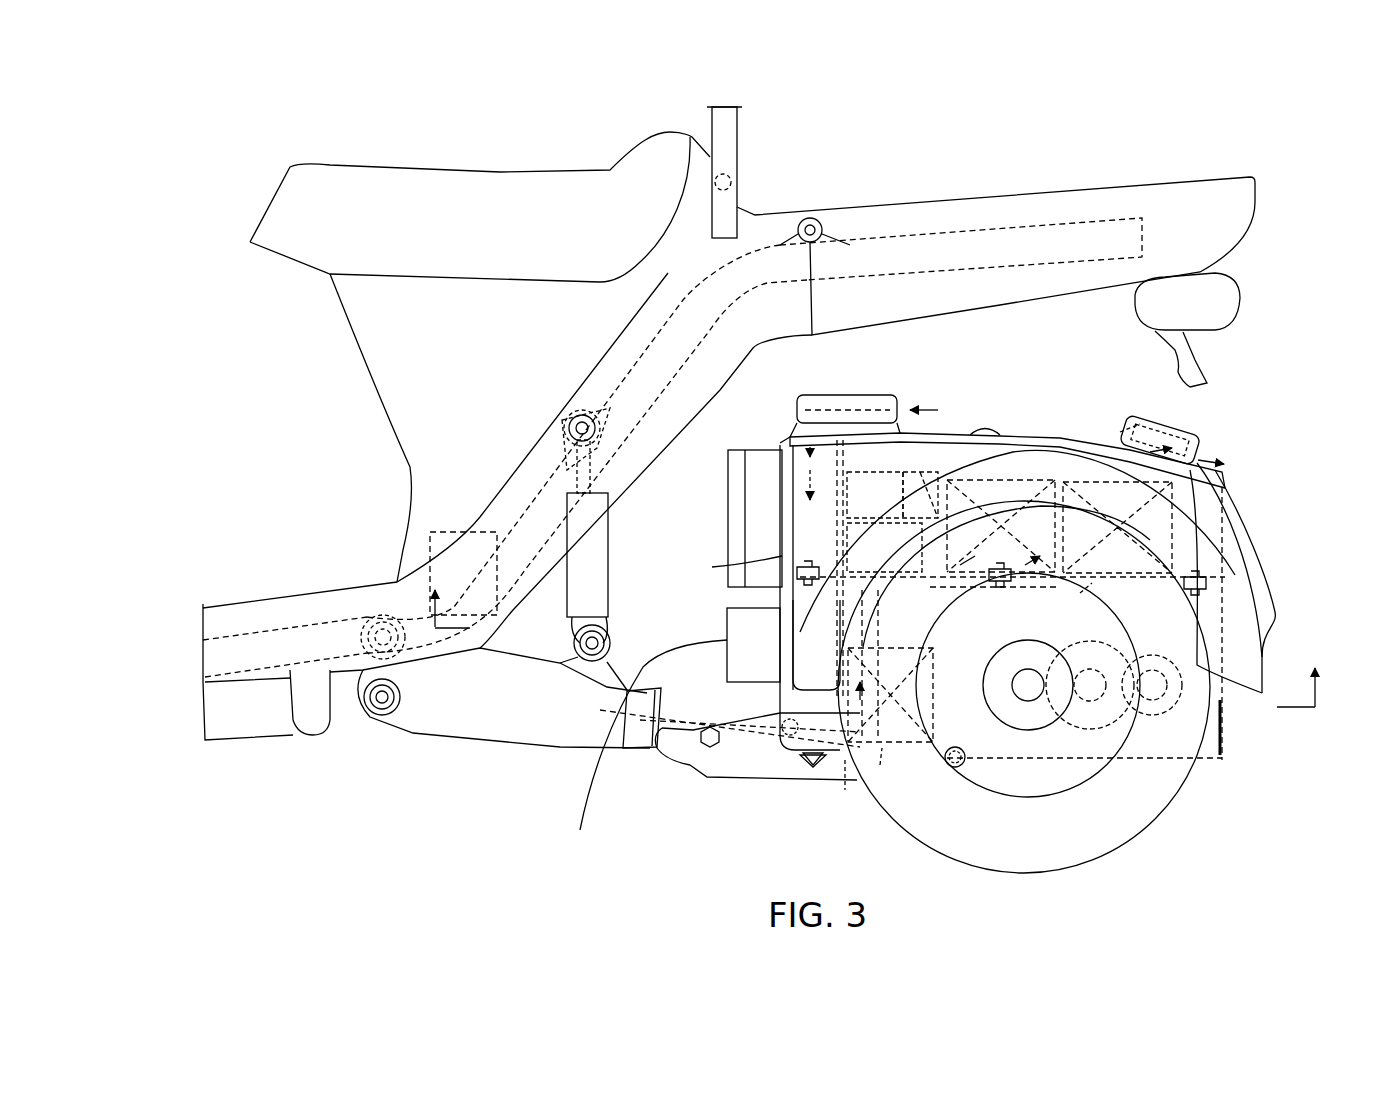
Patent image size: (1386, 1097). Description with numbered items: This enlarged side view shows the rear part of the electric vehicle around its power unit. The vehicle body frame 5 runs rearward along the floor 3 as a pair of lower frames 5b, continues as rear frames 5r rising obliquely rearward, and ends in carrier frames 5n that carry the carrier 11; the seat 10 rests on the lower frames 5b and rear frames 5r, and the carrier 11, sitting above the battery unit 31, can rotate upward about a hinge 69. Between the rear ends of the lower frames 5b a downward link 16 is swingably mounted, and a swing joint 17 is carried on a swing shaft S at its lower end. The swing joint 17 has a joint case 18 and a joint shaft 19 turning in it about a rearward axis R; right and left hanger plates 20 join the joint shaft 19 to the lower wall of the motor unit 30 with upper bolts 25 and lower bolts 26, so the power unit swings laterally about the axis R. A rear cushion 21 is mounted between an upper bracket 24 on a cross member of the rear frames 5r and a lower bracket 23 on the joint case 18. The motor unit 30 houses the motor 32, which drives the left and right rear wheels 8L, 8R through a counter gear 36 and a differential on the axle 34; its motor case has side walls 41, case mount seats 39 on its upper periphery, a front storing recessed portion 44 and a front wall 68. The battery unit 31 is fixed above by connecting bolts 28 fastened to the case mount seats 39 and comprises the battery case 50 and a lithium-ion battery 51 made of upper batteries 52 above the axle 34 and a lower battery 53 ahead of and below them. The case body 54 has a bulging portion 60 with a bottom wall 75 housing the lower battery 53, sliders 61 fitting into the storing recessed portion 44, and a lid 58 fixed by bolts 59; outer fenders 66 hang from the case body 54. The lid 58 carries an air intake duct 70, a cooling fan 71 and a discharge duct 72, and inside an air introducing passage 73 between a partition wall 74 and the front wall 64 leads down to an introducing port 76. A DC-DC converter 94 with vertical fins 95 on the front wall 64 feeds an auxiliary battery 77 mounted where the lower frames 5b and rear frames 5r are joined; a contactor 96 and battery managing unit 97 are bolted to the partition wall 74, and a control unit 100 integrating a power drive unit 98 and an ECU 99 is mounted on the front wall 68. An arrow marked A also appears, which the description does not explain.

The floor 3 is at (328, 595).
The vehicle body frame 5 is at (672, 409).
The lower frames 5b is at (225, 637).
The rear frames 5r is at (640, 360).
The carrier frames 5n is at (1043, 225).
The left rear wheel 8L is at (1048, 687).
The right rear wheel 8R is at (1150, 837).
The seat 10 is at (530, 180).
The carrier 11 is at (1237, 240).
The link 16 is at (368, 680).
The swing joint 17 is at (490, 740).
The joint case 18 is at (563, 737).
The joint shaft 19 is at (683, 760).
The hanger plates 20 is at (750, 780).
The rear cushion 21 is at (610, 548).
The lower bracket 23 is at (607, 660).
The upper bracket 24 is at (592, 408).
The upper bolts 25 is at (790, 766).
The lower bolts 26 is at (710, 750).
The connecting bolts 28 is at (808, 562).
The motor unit 30 is at (1220, 728).
The battery unit 31 is at (1222, 505).
The motor 32 is at (1150, 715).
The axle 34 is at (1028, 705).
The counter gear 36 is at (1083, 730).
The case mount seats 39 is at (808, 592).
The side walls 41 is at (1057, 752).
The storing recessed portion 44 is at (858, 790).
The battery case 50 is at (1064, 550).
The battery 51 is at (1067, 629).
The upper batteries 52 is at (1020, 470).
The lower battery 53 is at (897, 800).
The case body 54 is at (1210, 525).
The lid 58 is at (945, 432).
The bolts 59 is at (983, 432).
The bulging portion 60 is at (955, 628).
The sliders 61 is at (893, 612).
The front wall 64 is at (735, 563).
The outer fenders 66 is at (1270, 590).
The front wall 68 is at (778, 697).
The hinge 69 is at (812, 215).
The air intake duct 70 is at (862, 393).
The cooling fan 71 is at (1150, 425).
The discharge duct 72 is at (1188, 430).
The air introducing passage 73 is at (787, 440).
The partition wall 74 is at (850, 466).
The bottom wall 75 is at (880, 765).
The introducing port 76 is at (816, 766).
The auxiliary battery 77 is at (430, 548).
The DC-DC converter 94 is at (761, 505).
The vertical fins 95 is at (737, 455).
The contactor 96 is at (941, 478).
The battery managing unit 97 is at (910, 478).
The power drive unit 98 is at (648, 749).
The ECU 99 is at (653, 735).
The control unit 100 is at (653, 735).
The view direction arrow A is at (876, 642).
The axis R is at (635, 750).
The swing shaft S is at (385, 712).